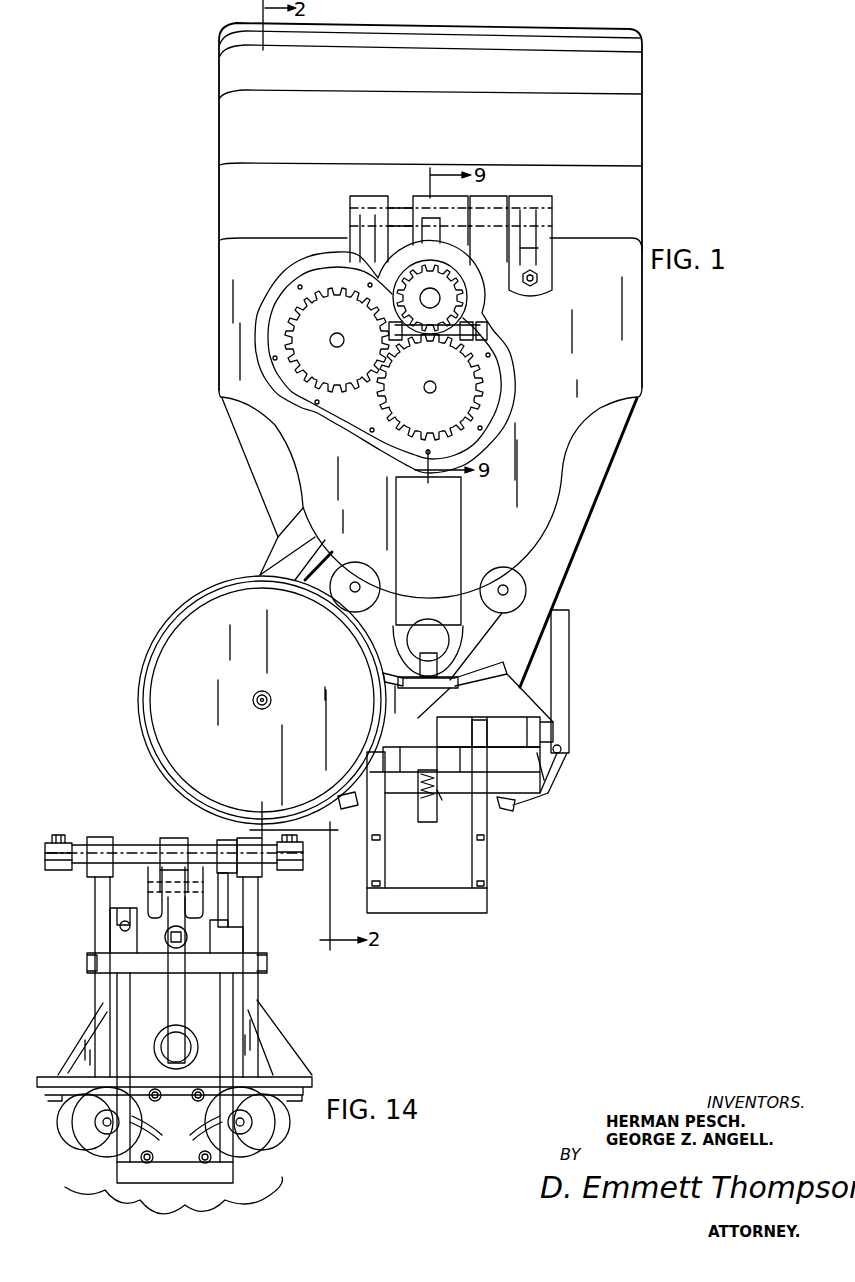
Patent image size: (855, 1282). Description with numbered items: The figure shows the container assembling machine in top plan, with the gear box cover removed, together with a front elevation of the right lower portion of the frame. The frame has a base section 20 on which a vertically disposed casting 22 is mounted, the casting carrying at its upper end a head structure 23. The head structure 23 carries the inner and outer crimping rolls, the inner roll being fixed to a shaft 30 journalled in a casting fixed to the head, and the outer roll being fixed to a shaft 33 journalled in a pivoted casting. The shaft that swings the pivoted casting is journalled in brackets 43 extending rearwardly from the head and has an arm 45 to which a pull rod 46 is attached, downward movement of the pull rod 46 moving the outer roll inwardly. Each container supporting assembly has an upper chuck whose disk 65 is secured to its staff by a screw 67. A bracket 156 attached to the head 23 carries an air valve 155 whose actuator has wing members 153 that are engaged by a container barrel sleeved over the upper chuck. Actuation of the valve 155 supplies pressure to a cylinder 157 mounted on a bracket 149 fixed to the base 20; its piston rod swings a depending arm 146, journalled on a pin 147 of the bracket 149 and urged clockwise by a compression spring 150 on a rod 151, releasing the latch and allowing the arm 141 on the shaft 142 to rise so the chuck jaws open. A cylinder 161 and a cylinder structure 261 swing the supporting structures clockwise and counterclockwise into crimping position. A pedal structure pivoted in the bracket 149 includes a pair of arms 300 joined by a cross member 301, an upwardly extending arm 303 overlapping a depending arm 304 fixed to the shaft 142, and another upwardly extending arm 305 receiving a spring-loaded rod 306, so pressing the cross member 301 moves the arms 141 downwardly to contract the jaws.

In FIG. 1, the base section 20 is at (565, 506).
In FIG. 1, the vertically disposed casting 22 is at (415, 118).
In FIG. 1, the head structure 23 is at (541, 408).
In FIG. 1, the shaft 30 is at (431, 388).
In FIG. 1, the shaft 33 is at (433, 300).
In FIG. 1, the brackets 43 is at (371, 208).
In FIG. 1, the arm 45 is at (540, 252).
In FIG. 1, the pull rod 46 is at (537, 281).
In FIG. 1, the disk 65 is at (215, 756).
In FIG. 1, the screw 67 is at (272, 702).
In FIG. 1, the arm 141 is at (562, 660).
In FIG. 14, the arm 141 is at (50, 843).
In FIG. 1, the shaft 142 is at (547, 728).
In FIG. 14, the shaft 142 is at (145, 853).
In FIG. 1, the depending arm 146 is at (423, 812).
In FIG. 14, the depending arm 146 is at (183, 1000).
In FIG. 14, the pin 147 is at (148, 880).
In FIG. 14, the bracket 149 is at (88, 1023).
In FIG. 1, the compression spring 150 is at (516, 593).
In FIG. 1, the rod 151 is at (343, 594).
In FIG. 14, the rod 151 is at (169, 946).
In FIG. 1, the wing members 153 is at (374, 673).
In FIG. 1, the air valve 155 is at (429, 634).
In FIG. 1, the bracket 156 is at (411, 563).
In FIG. 14, the cylinder 157 is at (160, 1040).
In FIG. 1, the cylinder 161 is at (357, 808).
In FIG. 14, the cylinder 161 is at (68, 1132).
In FIG. 1, the cylinder structure 261 is at (502, 808).
In FIG. 14, the cylinder structure 261 is at (274, 1138).
In FIG. 1, the arms 300 is at (477, 861).
In FIG. 14, the arms 300 is at (115, 1040).
In FIG. 1, the cross member 301 is at (427, 900).
In FIG. 14, the cross member 301 is at (170, 1172).
In FIG. 14, the upwardly extending arm 303 is at (232, 935).
In FIG. 14, the depending arm 304 is at (226, 900).
In FIG. 14, the upwardly extending arm 305 is at (118, 942).
In FIG. 14, the rod 306 is at (118, 927).